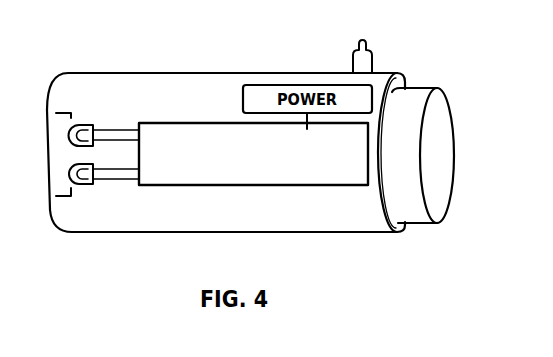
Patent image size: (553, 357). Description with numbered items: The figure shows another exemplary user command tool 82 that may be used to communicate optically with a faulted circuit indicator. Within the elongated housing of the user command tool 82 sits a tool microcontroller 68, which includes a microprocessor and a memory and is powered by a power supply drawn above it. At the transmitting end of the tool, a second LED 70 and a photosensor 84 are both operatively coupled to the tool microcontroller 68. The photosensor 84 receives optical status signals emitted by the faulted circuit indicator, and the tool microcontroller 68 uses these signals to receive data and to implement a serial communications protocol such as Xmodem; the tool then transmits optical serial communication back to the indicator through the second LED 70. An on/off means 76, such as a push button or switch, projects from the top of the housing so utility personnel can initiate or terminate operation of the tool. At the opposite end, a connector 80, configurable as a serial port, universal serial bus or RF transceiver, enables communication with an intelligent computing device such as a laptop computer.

The user command tool 82 is at (142, 73).
The connector 80 is at (452, 120).
The on/off means 76 is at (372, 60).
The tool microcontroller 68 is at (255, 186).
The second LED 70 is at (103, 128).
The photosensor 84 is at (103, 183).